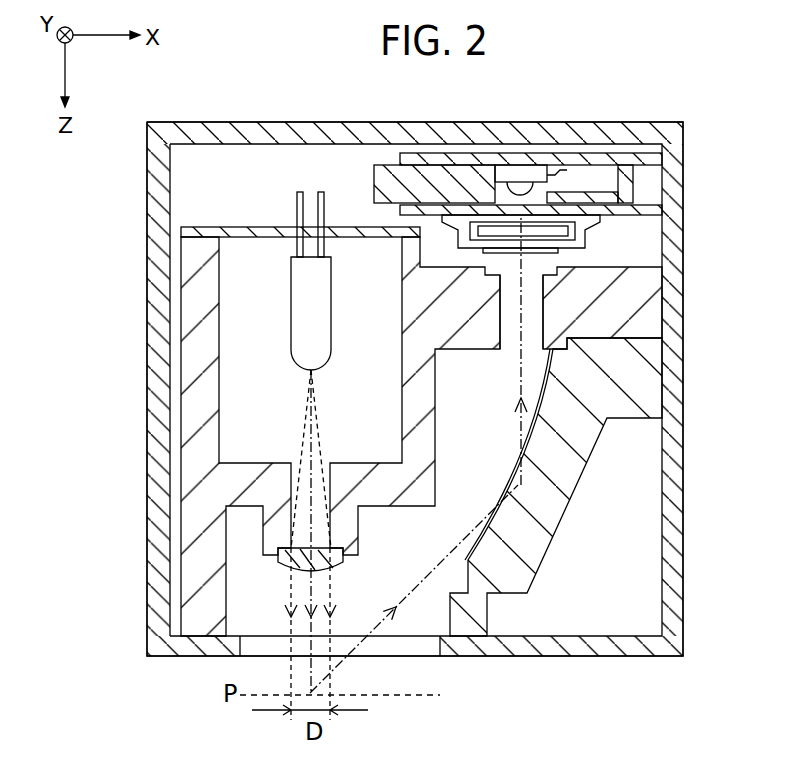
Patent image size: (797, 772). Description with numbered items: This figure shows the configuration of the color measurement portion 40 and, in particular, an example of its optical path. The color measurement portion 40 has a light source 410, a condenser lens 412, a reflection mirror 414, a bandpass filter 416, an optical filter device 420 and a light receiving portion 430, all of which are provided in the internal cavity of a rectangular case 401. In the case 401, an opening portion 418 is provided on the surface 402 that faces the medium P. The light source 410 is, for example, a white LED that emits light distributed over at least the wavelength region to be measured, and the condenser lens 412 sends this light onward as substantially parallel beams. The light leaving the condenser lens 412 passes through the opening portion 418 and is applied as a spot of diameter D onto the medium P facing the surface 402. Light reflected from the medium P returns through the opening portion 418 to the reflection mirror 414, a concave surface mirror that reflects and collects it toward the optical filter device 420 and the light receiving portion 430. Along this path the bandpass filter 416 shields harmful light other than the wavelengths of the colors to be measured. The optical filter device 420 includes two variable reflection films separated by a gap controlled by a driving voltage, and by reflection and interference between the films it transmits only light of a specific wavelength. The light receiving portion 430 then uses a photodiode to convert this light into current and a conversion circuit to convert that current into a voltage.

The color measurement portion 40 is at (670, 78).
The case 401 is at (260, 137).
The surface 402 is at (565, 655).
The light source 410 is at (318, 357).
The condenser lens 412 is at (341, 567).
The reflection mirror 414 is at (540, 402).
The bandpass filter 416 is at (508, 275).
The opening portion 418 is at (440, 642).
The optical filter device 420 is at (627, 240).
The light receiving portion 430 is at (583, 177).